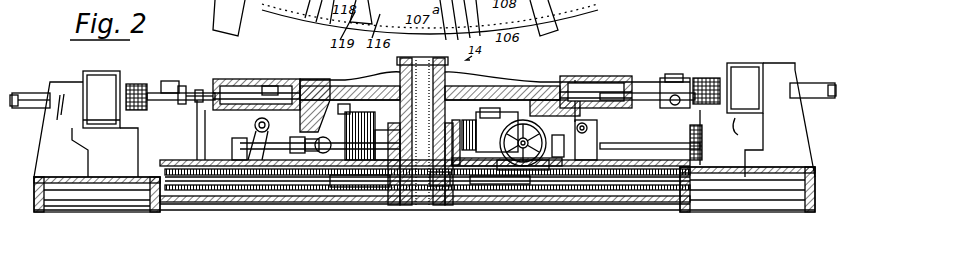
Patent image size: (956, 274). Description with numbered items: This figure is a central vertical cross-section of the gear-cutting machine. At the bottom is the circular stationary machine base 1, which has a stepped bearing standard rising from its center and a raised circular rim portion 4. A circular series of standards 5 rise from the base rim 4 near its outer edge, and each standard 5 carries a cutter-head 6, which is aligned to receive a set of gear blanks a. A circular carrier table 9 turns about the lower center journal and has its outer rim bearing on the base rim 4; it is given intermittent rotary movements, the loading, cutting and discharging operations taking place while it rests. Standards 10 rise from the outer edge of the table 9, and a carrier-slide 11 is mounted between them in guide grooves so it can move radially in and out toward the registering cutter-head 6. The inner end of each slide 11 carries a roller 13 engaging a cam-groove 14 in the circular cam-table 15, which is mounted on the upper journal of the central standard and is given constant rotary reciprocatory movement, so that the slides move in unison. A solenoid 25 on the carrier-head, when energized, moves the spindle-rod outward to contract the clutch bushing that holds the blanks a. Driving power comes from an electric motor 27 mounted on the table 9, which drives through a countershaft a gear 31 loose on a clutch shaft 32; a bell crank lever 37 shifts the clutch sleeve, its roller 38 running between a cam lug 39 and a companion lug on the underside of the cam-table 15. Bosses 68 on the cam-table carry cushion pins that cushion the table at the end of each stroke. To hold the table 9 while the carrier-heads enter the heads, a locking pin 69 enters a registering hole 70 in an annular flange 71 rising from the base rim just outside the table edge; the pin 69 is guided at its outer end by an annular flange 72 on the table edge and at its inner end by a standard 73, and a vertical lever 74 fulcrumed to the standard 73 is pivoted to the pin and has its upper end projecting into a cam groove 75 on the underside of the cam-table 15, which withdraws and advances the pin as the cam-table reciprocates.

The stationary machine base 1 is at (290, 186).
The raised circular rim portion 4 is at (92, 180).
The standard 5 is at (42, 146).
The cutter-head 6 is at (101, 99).
The carrier table 9 is at (225, 162).
The standard 10 is at (192, 128).
The carrier-slide 11 is at (200, 92).
The roller 13 is at (268, 86).
The cam-groove 14 is at (250, 84).
The cam-table 15 is at (345, 86).
The solenoid 25 is at (170, 81).
The electric motor 27 is at (523, 168).
The gear 31 is at (457, 152).
The clutch shaft 32 is at (322, 138).
The bell crank lever 37 is at (468, 120).
The roller 38 is at (484, 108).
The cam lug 39 is at (527, 98).
The boss 68 is at (612, 118).
The locking pin 69 is at (638, 152).
The registering hole 70 is at (702, 143).
The annular flange 71 is at (702, 150).
The annular flange 72 is at (647, 102).
The standard 73 is at (600, 150).
The lever 74 is at (568, 160).
The cam groove 75 is at (576, 86).
The gear blank a is at (137, 84).